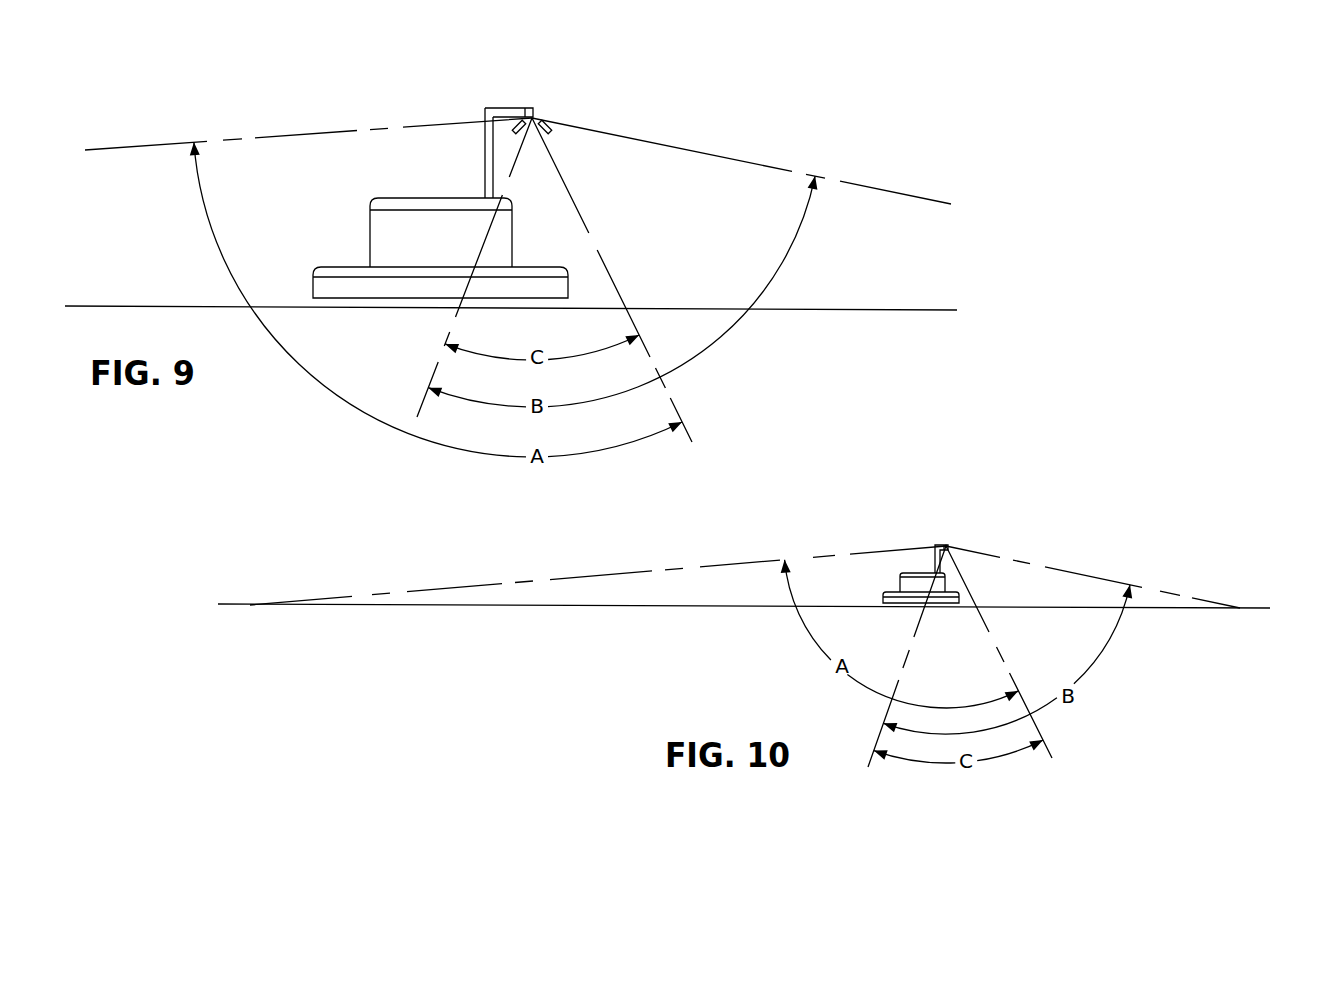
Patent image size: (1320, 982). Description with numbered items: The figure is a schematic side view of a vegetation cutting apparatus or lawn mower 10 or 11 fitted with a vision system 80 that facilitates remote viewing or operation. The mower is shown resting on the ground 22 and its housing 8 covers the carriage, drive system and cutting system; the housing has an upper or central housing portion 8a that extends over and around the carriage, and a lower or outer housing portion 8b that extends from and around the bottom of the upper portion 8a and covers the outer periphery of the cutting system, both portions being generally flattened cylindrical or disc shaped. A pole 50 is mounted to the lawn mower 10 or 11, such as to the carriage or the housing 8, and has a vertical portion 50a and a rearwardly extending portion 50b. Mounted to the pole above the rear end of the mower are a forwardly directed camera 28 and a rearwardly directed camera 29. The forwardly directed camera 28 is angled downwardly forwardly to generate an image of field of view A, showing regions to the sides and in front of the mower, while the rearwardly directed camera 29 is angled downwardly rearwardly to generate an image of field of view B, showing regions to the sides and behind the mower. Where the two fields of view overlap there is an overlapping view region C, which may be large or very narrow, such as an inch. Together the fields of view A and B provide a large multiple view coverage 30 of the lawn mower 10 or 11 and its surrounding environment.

In FIG. 9, the housing 8 is at (422, 224).
In FIG. 10, the housing 8 is at (900, 582).
In FIG. 9, the upper housing portion 8a is at (390, 200).
In FIG. 9, the lower housing portion 8b is at (332, 267).
In FIG. 9, the lawn mower 10 is at (354, 71).
In FIG. 10, the lawn mower 10 is at (1129, 497).
In FIG. 9, the lawn mower 11 is at (380, 108).
In FIG. 10, the lawn mower 11 is at (1077, 518).
In FIG. 9, the ground surface 22 is at (837, 308).
In FIG. 9, the forwardly directed camera 28 is at (518, 103).
In FIG. 10, the forwardly directed camera 28 is at (957, 540).
In FIG. 9, the rearwardly directed camera 29 is at (547, 103).
In FIG. 10, the rearwardly directed camera 29 is at (940, 530).
In FIG. 9, the multiple view coverage 30 is at (270, 136).
In FIG. 10, the multiple view coverage 30 is at (727, 564).
In FIG. 9, the pole 50 is at (474, 128).
In FIG. 10, the pole 50 is at (935, 556).
In FIG. 9, the vertical portion 50a is at (486, 177).
In FIG. 9, the rearwardly extending portion 50b is at (494, 105).
In FIG. 9, the vision system 80 is at (773, 123).
In FIG. 10, the vision system 80 is at (1073, 453).